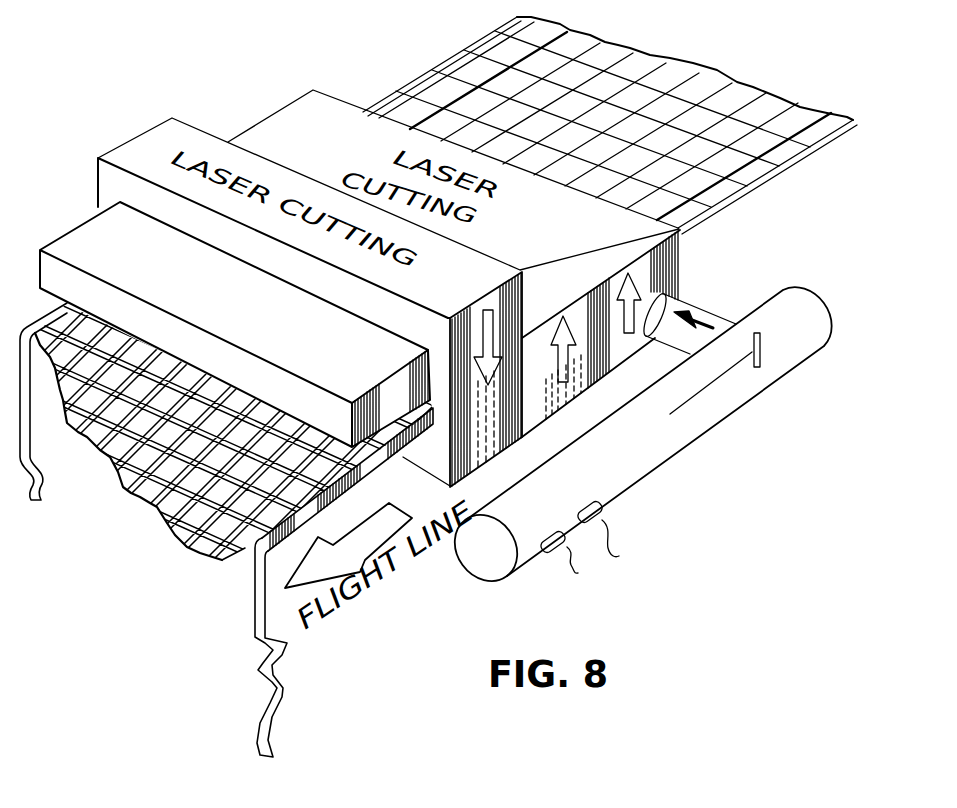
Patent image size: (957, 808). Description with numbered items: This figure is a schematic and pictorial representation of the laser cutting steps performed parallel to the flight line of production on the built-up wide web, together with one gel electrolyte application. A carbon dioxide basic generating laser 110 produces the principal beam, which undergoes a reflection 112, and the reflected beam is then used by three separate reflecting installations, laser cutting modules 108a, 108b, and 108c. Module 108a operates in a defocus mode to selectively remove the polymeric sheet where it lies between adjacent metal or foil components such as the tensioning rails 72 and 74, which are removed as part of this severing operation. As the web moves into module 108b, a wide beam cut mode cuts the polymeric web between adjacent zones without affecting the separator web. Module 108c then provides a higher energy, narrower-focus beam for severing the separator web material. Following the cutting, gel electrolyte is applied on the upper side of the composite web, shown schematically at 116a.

The tensioning rail 72 is at (283, 692).
The tensioning rail 74 is at (36, 325).
The laser cutting module 108a is at (670, 268).
The laser cutting module 108b is at (567, 380).
The laser cutting module 108c is at (484, 423).
The carbon dioxide laser 110 is at (670, 450).
The beam reflection 112 is at (762, 360).
The gel electrolyte application 116a is at (88, 243).